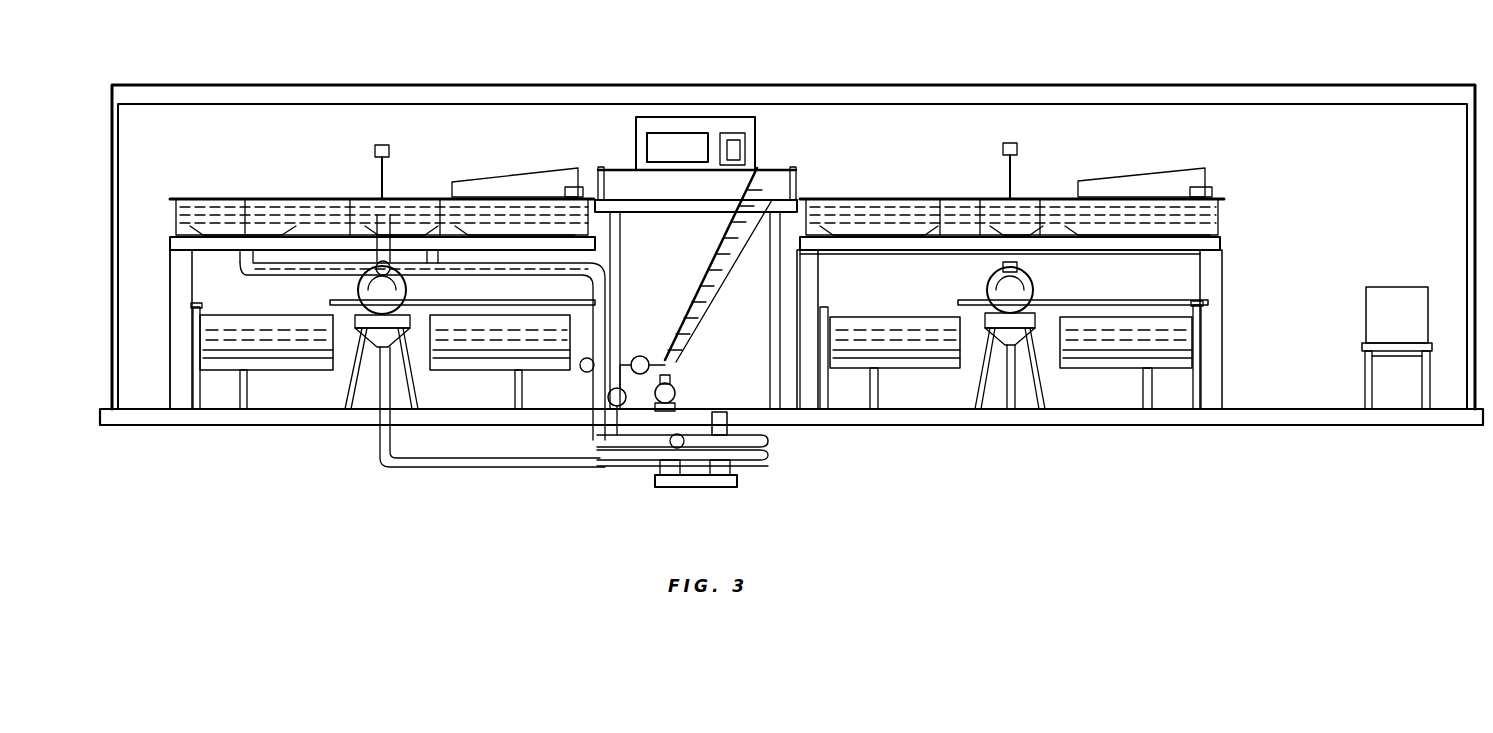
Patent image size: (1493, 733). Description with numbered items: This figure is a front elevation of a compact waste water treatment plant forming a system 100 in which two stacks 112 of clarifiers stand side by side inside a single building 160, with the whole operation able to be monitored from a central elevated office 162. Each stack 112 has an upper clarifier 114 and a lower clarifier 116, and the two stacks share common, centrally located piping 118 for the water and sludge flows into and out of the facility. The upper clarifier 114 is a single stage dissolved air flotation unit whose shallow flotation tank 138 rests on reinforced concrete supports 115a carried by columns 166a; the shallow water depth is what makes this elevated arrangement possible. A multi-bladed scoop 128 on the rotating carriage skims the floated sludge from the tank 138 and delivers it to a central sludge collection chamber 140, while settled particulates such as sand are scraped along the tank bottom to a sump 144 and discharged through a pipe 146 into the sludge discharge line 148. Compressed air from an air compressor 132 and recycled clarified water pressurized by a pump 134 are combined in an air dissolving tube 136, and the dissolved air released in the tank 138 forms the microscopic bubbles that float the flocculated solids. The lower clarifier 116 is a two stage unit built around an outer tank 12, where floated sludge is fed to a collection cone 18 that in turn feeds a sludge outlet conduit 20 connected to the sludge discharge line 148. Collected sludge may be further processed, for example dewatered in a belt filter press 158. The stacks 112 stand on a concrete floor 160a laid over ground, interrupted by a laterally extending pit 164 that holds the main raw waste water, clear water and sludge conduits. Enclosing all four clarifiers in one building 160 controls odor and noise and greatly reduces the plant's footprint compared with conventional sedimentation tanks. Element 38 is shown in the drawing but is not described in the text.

The system 100 is at (985, 32).
The stack 112 is at (468, 135).
The building 160 is at (790, 88).
The concrete floor 160a is at (1132, 415).
The central elevated office 162 is at (757, 150).
The upper clarifier 114 is at (170, 212).
The supports 115a is at (172, 242).
The flotation tank 138 is at (248, 222).
The central sludge collection chamber 140 is at (395, 215).
The multi-bladed scoop 128 is at (528, 178).
The sump 144 is at (232, 240).
The pipe 146 is at (318, 275).
The sludge discharge line 148 is at (487, 468).
The post cap 38 is at (193, 308).
The lower clarifier 116 is at (192, 330).
The columns 166a is at (172, 357).
The outer tank 12 is at (875, 322).
The collection cone 18 is at (415, 305).
The sludge outlet conduit 20 is at (385, 375).
The air dissolving tube 136 is at (638, 356).
The air compressor 132 is at (670, 382).
The pump 134 is at (607, 401).
The piping 118 is at (700, 396).
The laterally extending pit 164 is at (700, 420).
The belt filter press 158 is at (1362, 300).